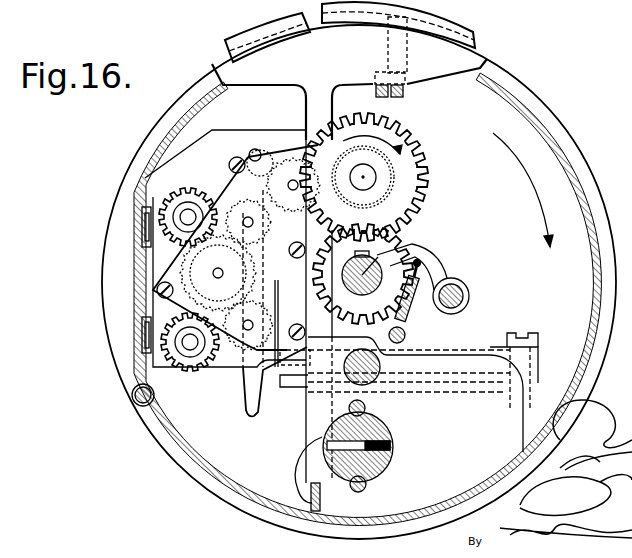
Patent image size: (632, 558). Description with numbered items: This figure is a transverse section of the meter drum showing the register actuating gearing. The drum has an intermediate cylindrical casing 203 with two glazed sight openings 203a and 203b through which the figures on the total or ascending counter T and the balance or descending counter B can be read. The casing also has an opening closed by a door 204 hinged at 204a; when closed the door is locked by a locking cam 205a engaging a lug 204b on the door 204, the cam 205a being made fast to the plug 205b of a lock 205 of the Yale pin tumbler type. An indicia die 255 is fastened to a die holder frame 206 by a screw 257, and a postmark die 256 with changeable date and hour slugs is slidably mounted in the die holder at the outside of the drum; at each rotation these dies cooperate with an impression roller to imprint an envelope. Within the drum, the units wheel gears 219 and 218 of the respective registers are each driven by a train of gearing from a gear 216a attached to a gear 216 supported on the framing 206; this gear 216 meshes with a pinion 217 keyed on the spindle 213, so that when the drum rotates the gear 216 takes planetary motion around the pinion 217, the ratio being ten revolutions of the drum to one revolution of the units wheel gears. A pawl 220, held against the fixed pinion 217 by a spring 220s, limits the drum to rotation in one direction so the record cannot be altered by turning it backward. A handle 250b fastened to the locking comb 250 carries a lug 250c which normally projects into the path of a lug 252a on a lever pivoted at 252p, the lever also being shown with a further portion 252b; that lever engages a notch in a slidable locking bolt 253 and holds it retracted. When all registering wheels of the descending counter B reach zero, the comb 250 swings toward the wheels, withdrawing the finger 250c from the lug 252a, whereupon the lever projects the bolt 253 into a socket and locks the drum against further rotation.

The cylindrical casing 203 is at (563, 147).
The glazed sight opening 203a is at (150, 240).
The glazed sight opening 203b is at (145, 352).
The door 204 is at (240, 492).
The door hinge 204a is at (138, 400).
The lug 204b is at (322, 505).
The lock 205 is at (378, 428).
The locking cam 205a is at (305, 472).
The lock plug 205b is at (380, 452).
The die holder frame 206 is at (453, 68).
The spindle 213 is at (403, 247).
The gear 216 is at (408, 180).
The gear 216a is at (393, 170).
The pinion 217 is at (377, 247).
The units wheel gear 218 is at (152, 202).
The units wheel gear 219 is at (197, 364).
The pawl 220 is at (453, 275).
The spring 220s is at (408, 315).
The locking comb 250 is at (172, 203).
The handle 250b is at (224, 378).
The lug 250c is at (275, 305).
The lug 252a is at (290, 330).
The slide slot 252b is at (289, 380).
The lever pivot 252p is at (530, 335).
The locking bolt 253 is at (372, 372).
The indicia die 255 is at (410, 24).
The postmark die 256 is at (271, 33).
The screw 257 is at (402, 90).
The descending counter B is at (150, 327).